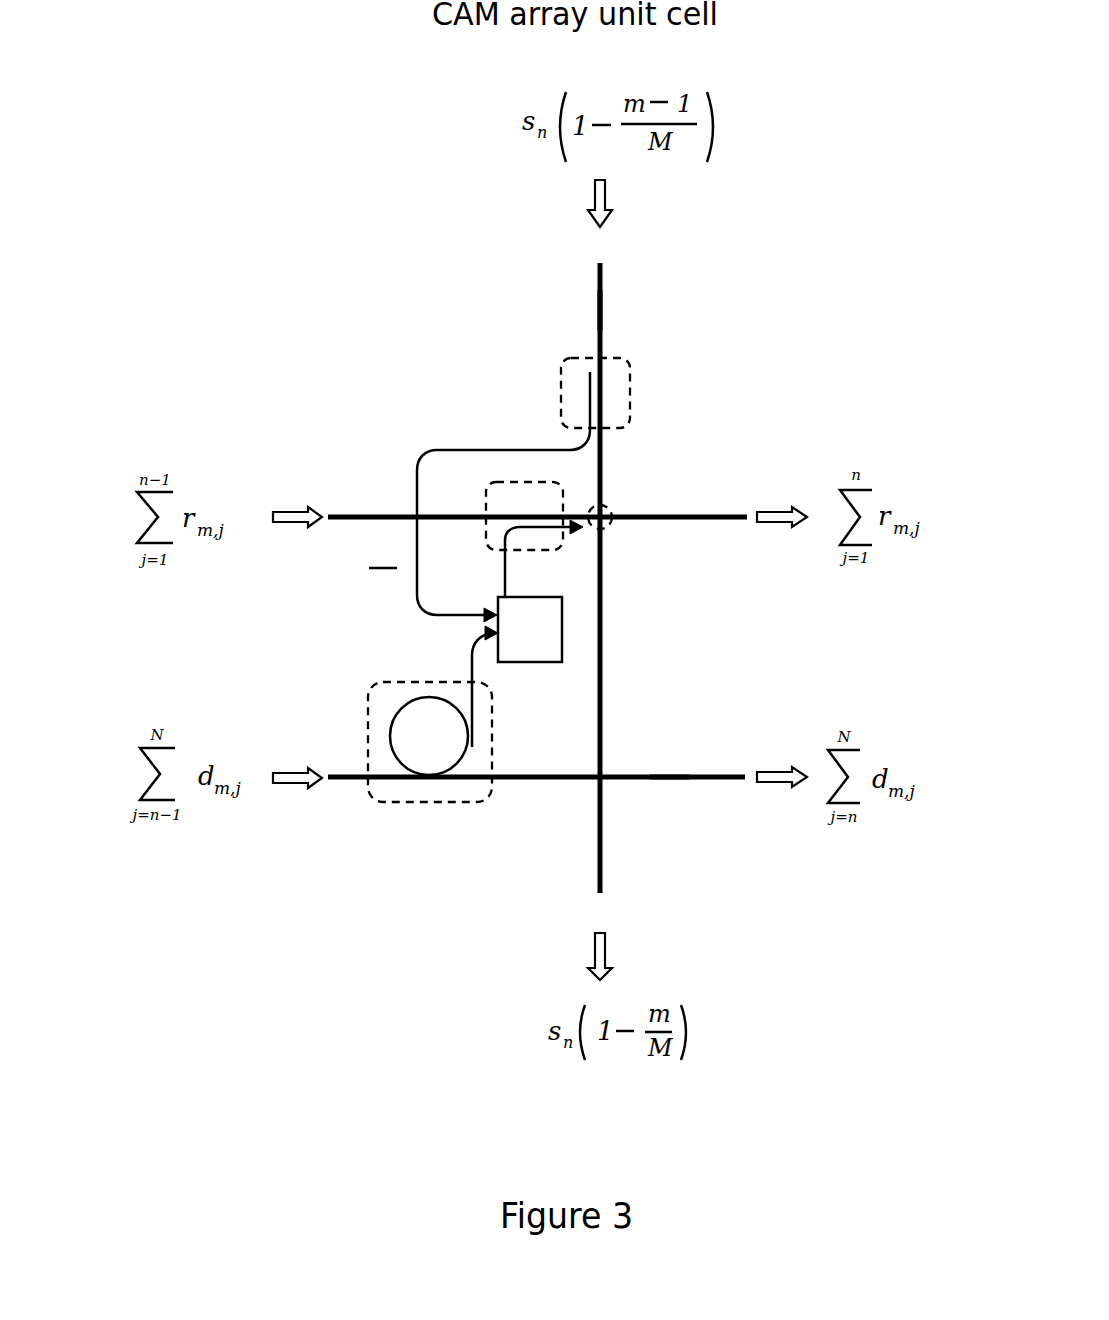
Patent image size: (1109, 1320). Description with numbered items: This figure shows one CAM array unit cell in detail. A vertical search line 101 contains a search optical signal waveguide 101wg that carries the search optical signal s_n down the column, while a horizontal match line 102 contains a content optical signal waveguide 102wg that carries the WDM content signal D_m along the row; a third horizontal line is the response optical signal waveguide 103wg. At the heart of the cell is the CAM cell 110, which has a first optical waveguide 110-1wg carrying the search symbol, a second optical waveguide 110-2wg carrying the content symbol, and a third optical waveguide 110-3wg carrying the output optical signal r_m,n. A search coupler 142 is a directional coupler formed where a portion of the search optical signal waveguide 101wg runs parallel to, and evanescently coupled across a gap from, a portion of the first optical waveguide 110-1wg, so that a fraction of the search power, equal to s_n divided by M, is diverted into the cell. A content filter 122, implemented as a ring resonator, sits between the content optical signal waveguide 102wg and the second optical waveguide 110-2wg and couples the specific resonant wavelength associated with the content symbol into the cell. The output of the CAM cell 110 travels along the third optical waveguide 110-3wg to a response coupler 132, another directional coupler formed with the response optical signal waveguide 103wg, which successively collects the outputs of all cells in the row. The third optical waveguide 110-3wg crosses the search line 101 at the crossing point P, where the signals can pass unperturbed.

The search line 101 is at (592, 313).
The search optical signal waveguide 101wg is at (602, 342).
The search coupler 142 is at (630, 393).
The response coupler 132 is at (515, 480).
The first optical waveguide 110-1wg is at (412, 473).
The response optical signal waveguide 103wg is at (650, 517).
The crossing point P is at (611, 527).
The third optical waveguide 110-3wg is at (507, 558).
The CAM cell 110 is at (530, 629).
The content optical signal waveguide 102wg is at (643, 777).
The match line 102 is at (668, 785).
The second optical waveguide 110-2wg is at (475, 702).
The content filter 122 is at (420, 802).